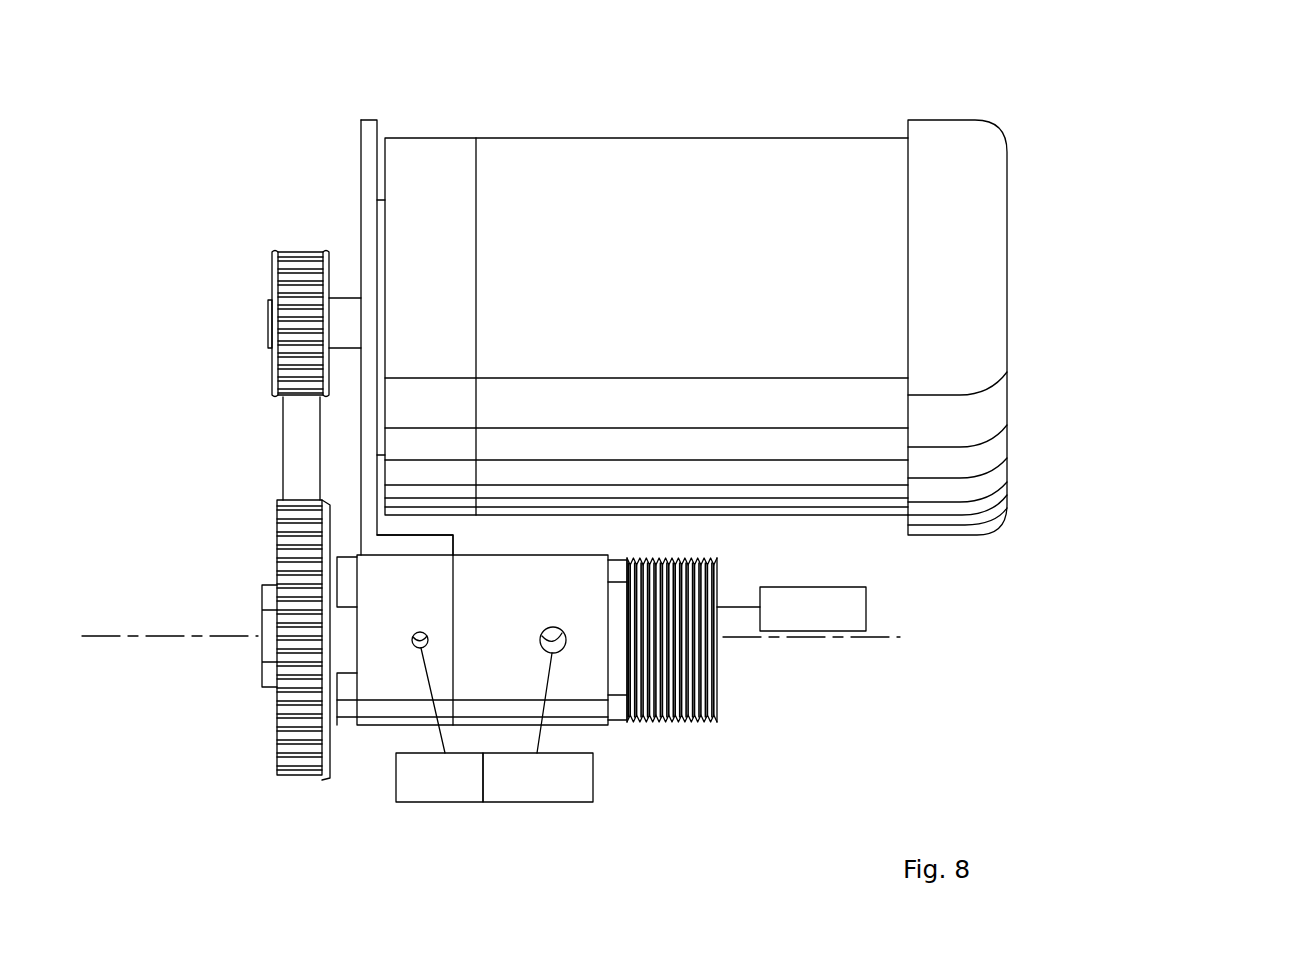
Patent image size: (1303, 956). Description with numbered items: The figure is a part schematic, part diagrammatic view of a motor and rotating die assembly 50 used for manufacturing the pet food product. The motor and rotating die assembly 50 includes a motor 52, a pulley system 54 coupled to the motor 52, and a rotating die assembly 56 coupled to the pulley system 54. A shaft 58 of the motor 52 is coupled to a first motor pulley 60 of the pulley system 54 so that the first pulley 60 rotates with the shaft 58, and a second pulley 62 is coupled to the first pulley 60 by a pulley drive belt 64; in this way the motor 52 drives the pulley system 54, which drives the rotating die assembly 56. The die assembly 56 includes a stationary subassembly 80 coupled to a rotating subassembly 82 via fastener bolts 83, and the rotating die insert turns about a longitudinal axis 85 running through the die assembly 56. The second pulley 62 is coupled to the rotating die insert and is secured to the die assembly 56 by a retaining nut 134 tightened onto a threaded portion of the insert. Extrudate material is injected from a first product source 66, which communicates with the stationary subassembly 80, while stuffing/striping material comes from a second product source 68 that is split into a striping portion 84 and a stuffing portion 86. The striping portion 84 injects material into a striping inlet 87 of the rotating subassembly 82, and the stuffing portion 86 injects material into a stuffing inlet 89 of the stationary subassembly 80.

The motor and rotating die assembly 50 is at (1172, 126).
The motor 52 is at (735, 148).
The pulley system 54 is at (245, 260).
The rotating die assembly 56 is at (726, 752).
The shaft 58 is at (347, 303).
The first motor pulley 60 is at (272, 282).
The second pulley 62 is at (279, 528).
The pulley drive belt 64 is at (283, 445).
The first product source 66 is at (868, 607).
The second product source 68 is at (494, 803).
The stationary subassembly 80 is at (598, 548).
The rotating subassembly 82 is at (420, 548).
The fastener bolts 83 is at (622, 556).
The striping portion 84 is at (438, 795).
The longitudinal axis 85 is at (110, 636).
The stuffing portion 86 is at (563, 795).
The striping inlet 87 is at (418, 632).
The stuffing inlet 89 is at (548, 628).
The retaining nut 134 is at (262, 670).